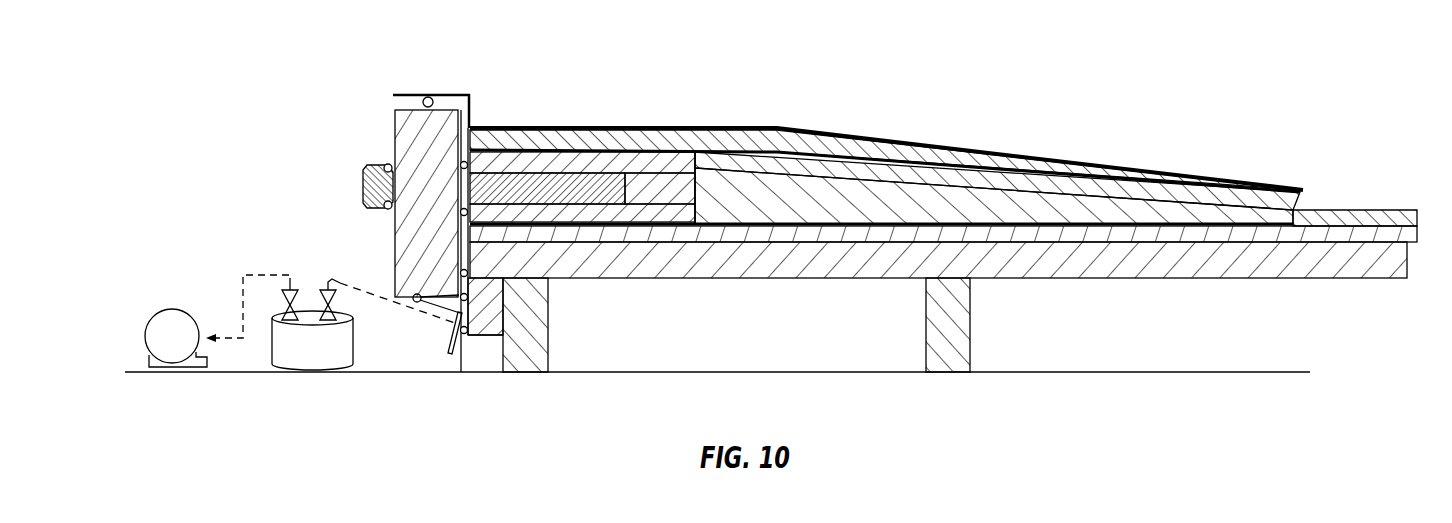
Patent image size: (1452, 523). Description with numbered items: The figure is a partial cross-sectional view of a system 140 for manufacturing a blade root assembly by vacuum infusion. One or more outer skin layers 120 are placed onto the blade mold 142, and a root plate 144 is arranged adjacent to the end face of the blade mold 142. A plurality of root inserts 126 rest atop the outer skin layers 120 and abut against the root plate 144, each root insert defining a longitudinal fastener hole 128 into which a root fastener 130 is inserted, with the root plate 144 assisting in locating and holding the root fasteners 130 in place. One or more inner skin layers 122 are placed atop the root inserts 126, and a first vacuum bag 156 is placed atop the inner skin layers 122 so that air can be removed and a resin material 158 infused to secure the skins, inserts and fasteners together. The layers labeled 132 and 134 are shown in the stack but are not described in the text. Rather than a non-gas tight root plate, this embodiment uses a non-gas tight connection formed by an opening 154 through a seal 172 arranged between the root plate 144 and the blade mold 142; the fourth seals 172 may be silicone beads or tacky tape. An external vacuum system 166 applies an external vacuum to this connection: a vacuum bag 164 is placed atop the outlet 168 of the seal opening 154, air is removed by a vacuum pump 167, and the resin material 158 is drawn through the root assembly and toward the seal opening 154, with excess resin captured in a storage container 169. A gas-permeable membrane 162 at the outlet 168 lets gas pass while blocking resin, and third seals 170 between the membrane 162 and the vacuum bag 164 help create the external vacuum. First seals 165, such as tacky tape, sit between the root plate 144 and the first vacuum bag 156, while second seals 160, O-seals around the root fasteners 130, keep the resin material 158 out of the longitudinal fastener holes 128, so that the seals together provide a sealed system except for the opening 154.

The outer skin layers 120 is at (1057, 233).
The inner skin layers 122 is at (1047, 199).
The root inserts 126 is at (663, 160).
The longitudinal fastener holes 128 is at (590, 212).
The root fasteners 130 is at (533, 187).
The release film 132 is at (477, 157).
The bagging film 134 is at (1000, 178).
The system 140 is at (163, 128).
The blade mold 142 is at (1305, 287).
The root plate 144 is at (385, 150).
The opening 154 is at (468, 272).
The first vacuum bag 156 is at (1023, 177).
The resin material 158 is at (1314, 200).
The second seals 160 is at (387, 160).
The membrane 162 is at (428, 306).
The vacuum bag 164 is at (428, 311).
The first seals 165 is at (429, 96).
The external vacuum system 166 is at (122, 303).
The vacuum pump 167 is at (157, 359).
The outlet 168 is at (459, 296).
The storage container 169 is at (287, 373).
The third seals 170 is at (458, 344).
The fourth seals 172 is at (515, 292).